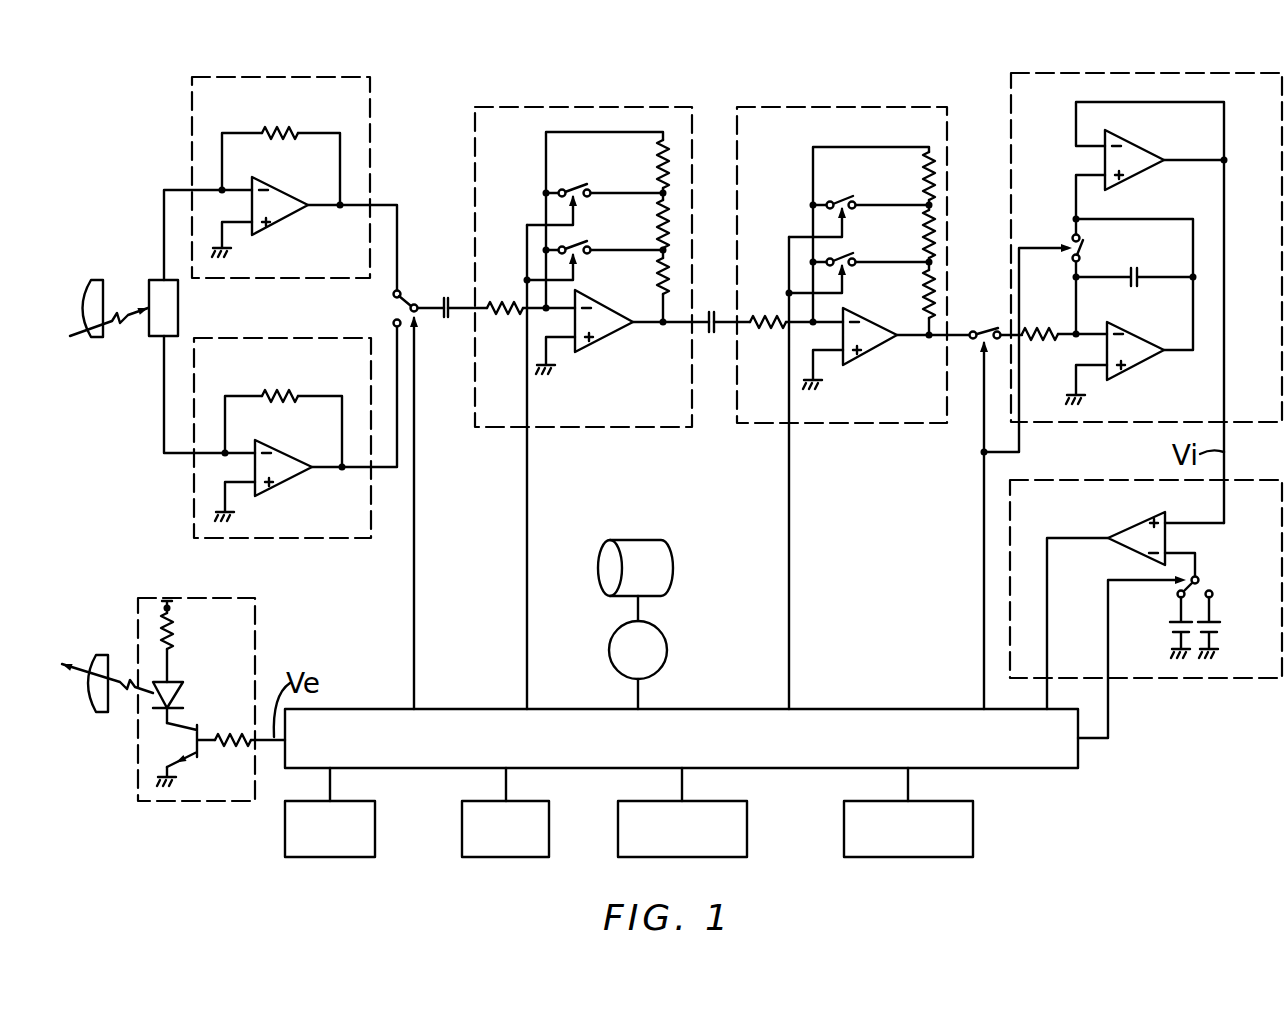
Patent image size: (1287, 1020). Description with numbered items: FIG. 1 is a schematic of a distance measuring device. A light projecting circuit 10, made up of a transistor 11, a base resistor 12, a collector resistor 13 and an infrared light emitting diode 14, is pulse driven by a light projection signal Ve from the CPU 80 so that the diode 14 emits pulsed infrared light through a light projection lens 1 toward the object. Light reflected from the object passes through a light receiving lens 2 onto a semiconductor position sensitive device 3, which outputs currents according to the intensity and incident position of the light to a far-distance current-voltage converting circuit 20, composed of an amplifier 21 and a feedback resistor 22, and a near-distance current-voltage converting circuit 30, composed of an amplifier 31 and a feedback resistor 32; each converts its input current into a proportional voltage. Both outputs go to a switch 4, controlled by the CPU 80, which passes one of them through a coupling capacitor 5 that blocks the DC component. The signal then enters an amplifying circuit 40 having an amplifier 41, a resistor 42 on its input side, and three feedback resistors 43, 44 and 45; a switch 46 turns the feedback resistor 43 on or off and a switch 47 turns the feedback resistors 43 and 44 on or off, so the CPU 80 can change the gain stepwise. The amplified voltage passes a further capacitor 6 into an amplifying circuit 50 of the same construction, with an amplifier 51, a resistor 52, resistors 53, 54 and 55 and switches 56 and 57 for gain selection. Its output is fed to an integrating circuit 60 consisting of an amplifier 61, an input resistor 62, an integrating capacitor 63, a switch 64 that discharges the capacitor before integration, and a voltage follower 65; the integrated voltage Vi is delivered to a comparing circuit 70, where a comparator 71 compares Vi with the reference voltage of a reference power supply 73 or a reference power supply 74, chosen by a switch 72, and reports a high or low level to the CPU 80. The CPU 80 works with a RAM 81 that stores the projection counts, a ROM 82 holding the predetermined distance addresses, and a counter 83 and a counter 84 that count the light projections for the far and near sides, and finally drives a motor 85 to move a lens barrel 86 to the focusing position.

The light projection lens 1 is at (96, 655).
The light receiving lens 2 is at (95, 280).
The semiconductor position sensitive device 3 is at (157, 280).
The switch 4 is at (416, 304).
The coupling capacitor 5 is at (446, 296).
The coupling capacitor 6 is at (710, 311).
The light projecting circuit 10 is at (170, 681).
The transistor 11 is at (163, 762).
The base resistor 12 is at (224, 738).
The collector resistor 13 is at (173, 638).
The infrared light emitting diode 14 is at (180, 682).
The current-voltage converting circuit 20 is at (295, 417).
The amplifier 21 is at (285, 485).
The feedback resistor 22 is at (286, 392).
The current-voltage converting circuit 30 is at (294, 169).
The amplifier 31 is at (283, 222).
The feedback resistor 32 is at (281, 130).
The amplifying circuit 40 is at (592, 387).
The amplifier 41 is at (612, 336).
The input resistor 42 is at (496, 304).
The feedback resistor 43 is at (658, 155).
The feedback resistor 44 is at (655, 218).
The feedback resistor 45 is at (657, 291).
The switch 46 is at (578, 186).
The switch 47 is at (573, 237).
The amplifying circuit 50 is at (866, 390).
The operational amplifier 51 is at (870, 351).
The input resistor 52 is at (758, 316).
The resistor 53 is at (925, 168).
The resistor 54 is at (934, 227).
The resistor 55 is at (925, 292).
The switch 56 is at (850, 201).
The switch 57 is at (854, 258).
The integrating circuit 60 is at (1133, 281).
The amplifier 61 is at (1133, 365).
The input resistor 62 is at (1041, 330).
The integrating capacitor 63 is at (1141, 282).
The switch 64 is at (1079, 238).
The voltage follower 65 is at (1137, 143).
The comparing circuit 70 is at (1146, 586).
The comparator 71 is at (1136, 524).
The switch 72 is at (1200, 578).
The reference power supply 73 is at (1170, 624).
The reference power supply 74 is at (1220, 625).
The CPU 80 is at (720, 709).
The RAM 81 is at (375, 829).
The ROM 82 is at (549, 829).
The counter 83 is at (747, 828).
The counter 84 is at (973, 828).
The motor 85 is at (607, 650).
The lens barrel 86 is at (640, 540).